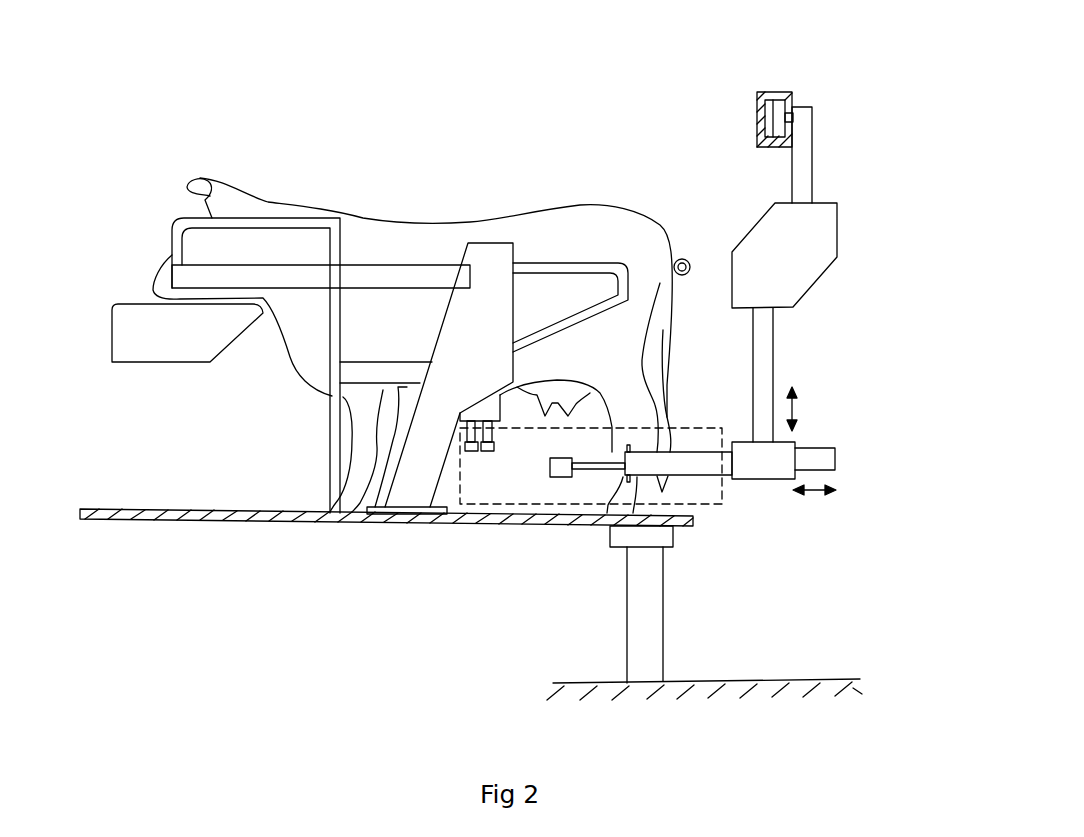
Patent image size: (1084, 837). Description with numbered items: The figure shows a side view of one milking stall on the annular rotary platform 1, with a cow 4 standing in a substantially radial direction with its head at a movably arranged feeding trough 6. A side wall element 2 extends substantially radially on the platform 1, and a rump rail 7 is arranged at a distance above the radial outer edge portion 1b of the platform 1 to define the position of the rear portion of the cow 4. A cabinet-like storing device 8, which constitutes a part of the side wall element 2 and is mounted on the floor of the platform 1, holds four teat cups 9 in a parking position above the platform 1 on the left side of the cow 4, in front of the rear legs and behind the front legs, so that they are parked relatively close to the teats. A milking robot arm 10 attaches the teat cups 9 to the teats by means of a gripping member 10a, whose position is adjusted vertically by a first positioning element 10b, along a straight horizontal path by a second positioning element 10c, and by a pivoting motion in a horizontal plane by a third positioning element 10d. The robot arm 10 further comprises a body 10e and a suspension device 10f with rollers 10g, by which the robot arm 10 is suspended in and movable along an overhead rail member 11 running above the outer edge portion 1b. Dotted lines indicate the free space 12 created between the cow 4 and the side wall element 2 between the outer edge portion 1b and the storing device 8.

The annular rotary platform 1 is at (132, 513).
The radial outer edge portion 1b is at (692, 527).
The side wall element 2 is at (398, 272).
The cow 4 is at (365, 238).
The feeding trough 6 is at (155, 325).
The rump rail 7 is at (688, 256).
The storing device 8 is at (490, 283).
The teat cups 9 is at (488, 452).
The milking robot arm 10 is at (860, 271).
The gripping member 10a is at (553, 477).
The first positioning element 10b is at (762, 368).
The second positioning element 10c is at (708, 465).
The third positioning element 10d is at (595, 467).
The body 10e is at (805, 235).
The suspension device 10f is at (802, 122).
The rollers 10g is at (780, 115).
The overhead rail member 11 is at (757, 98).
The free space 12 is at (692, 437).